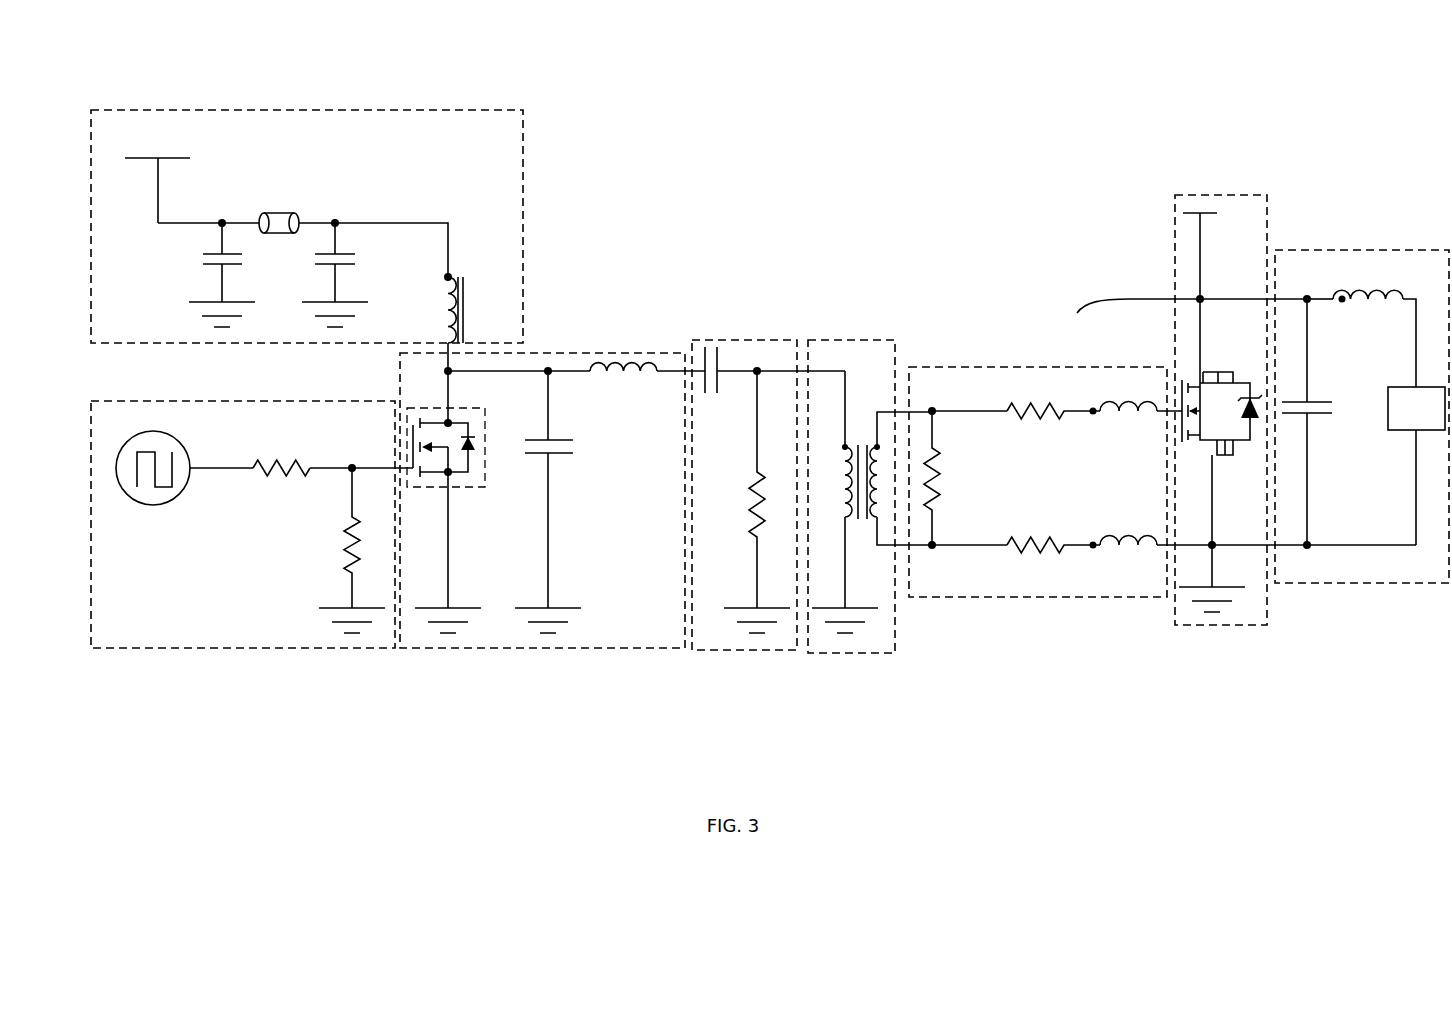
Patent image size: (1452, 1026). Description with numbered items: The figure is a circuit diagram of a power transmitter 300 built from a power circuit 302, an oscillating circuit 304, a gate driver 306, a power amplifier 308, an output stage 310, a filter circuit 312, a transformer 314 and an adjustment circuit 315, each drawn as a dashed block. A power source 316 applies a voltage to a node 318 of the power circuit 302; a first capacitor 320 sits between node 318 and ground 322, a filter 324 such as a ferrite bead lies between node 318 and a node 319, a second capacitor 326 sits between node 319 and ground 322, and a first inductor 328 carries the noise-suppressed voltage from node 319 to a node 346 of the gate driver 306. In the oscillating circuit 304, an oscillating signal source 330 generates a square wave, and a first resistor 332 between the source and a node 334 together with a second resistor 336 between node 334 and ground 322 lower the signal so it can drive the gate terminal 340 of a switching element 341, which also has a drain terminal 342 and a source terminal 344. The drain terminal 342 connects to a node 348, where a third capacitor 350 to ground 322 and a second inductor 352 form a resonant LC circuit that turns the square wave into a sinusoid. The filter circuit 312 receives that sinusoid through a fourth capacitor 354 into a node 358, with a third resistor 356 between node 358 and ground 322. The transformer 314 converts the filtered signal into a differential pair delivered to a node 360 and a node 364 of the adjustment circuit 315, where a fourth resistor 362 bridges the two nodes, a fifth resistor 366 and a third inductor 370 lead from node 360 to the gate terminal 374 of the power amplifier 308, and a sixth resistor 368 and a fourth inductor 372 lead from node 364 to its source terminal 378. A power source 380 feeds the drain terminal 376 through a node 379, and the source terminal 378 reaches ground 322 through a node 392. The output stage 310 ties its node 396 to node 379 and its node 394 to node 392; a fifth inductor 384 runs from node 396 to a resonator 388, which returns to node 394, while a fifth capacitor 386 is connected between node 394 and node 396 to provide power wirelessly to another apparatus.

The power transmitter 300 is at (330, 740).
The power circuit 302 is at (452, 110).
The oscillating circuit 304 is at (233, 648).
The gate driver 306 is at (525, 648).
The power amplifier 308 is at (1183, 195).
The output stage 310 is at (1415, 583).
The filter circuit 312 is at (712, 650).
The transformer 314 is at (853, 340).
The adjustment circuit 315 is at (990, 597).
The power source 316 is at (170, 158).
The node 318 is at (220, 221).
The node 319 is at (336, 221).
The first capacitor 320 is at (205, 266).
The ground 322 is at (248, 302).
The filter 324 is at (280, 213).
The second capacitor 326 is at (315, 266).
The first inductor 328 is at (449, 276).
The oscillating signal source 330 is at (168, 500).
The first resistor 332 is at (300, 466).
The node 334 is at (352, 465).
The second resistor 336 is at (349, 543).
The gate terminal 340 is at (412, 440).
The switching element 341 is at (460, 487).
The drain terminal 342 is at (448, 418).
The source terminal 344 is at (446, 474).
The node 346 is at (452, 375).
The node 348 is at (546, 373).
The third capacitor 350 is at (537, 455).
The second inductor 352 is at (655, 362).
The fourth capacitor 354 is at (717, 388).
The third resistor 356 is at (756, 500).
The node 358 is at (757, 368).
The node 360 is at (932, 408).
The fourth resistor 362 is at (940, 468).
The node 364 is at (932, 548).
The fifth resistor 366 is at (1045, 415).
The sixth resistor 368 is at (1017, 542).
The third inductor 370 is at (1122, 408).
The fourth inductor 372 is at (1124, 542).
The gate terminal 374 is at (1172, 413).
The drain terminal 376 is at (1192, 380).
The source terminal 378 is at (1193, 440).
The node 379 is at (1184, 314).
The power source 380 is at (1210, 214).
The fifth inductor 384 is at (1384, 296).
The fifth capacitor 386 is at (1320, 415).
The resonator 388 is at (1405, 430).
The node 392 is at (1213, 542).
The node 394 is at (1308, 548).
The node 396 is at (1308, 297).